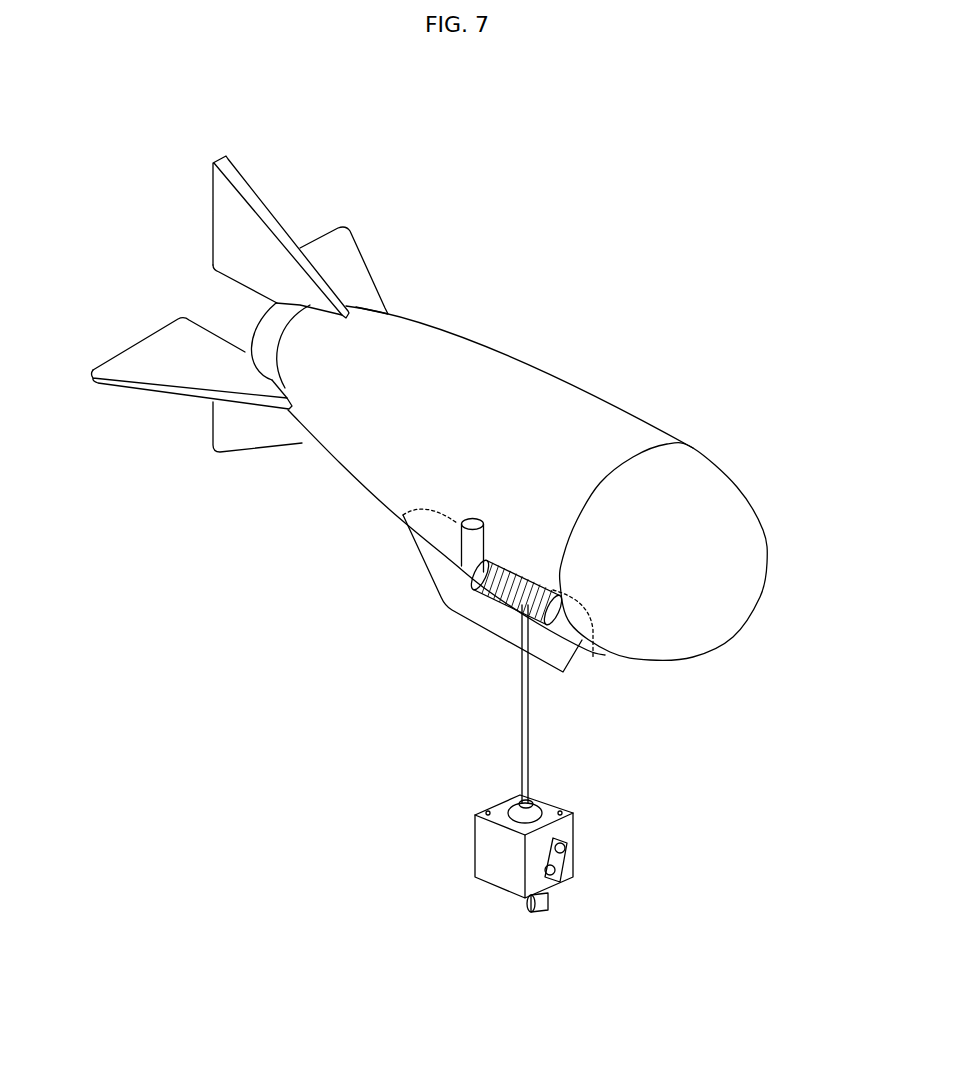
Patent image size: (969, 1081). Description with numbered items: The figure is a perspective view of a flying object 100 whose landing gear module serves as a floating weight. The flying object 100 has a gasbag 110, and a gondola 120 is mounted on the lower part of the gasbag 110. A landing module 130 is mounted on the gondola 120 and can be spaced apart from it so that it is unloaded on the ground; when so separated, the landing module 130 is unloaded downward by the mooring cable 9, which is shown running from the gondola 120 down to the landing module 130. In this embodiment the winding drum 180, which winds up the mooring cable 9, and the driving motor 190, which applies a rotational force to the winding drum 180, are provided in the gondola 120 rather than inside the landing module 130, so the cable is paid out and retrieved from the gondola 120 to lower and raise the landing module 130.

The unmanned aerial vehicle / airship 100 is at (607, 155).
The gasbag 110 is at (763, 370).
The gondola 120 is at (445, 568).
The landing module 130 is at (490, 850).
The winding drum 180 is at (633, 730).
The driving motor 190 is at (465, 524).
The mooring cable 9 is at (522, 697).